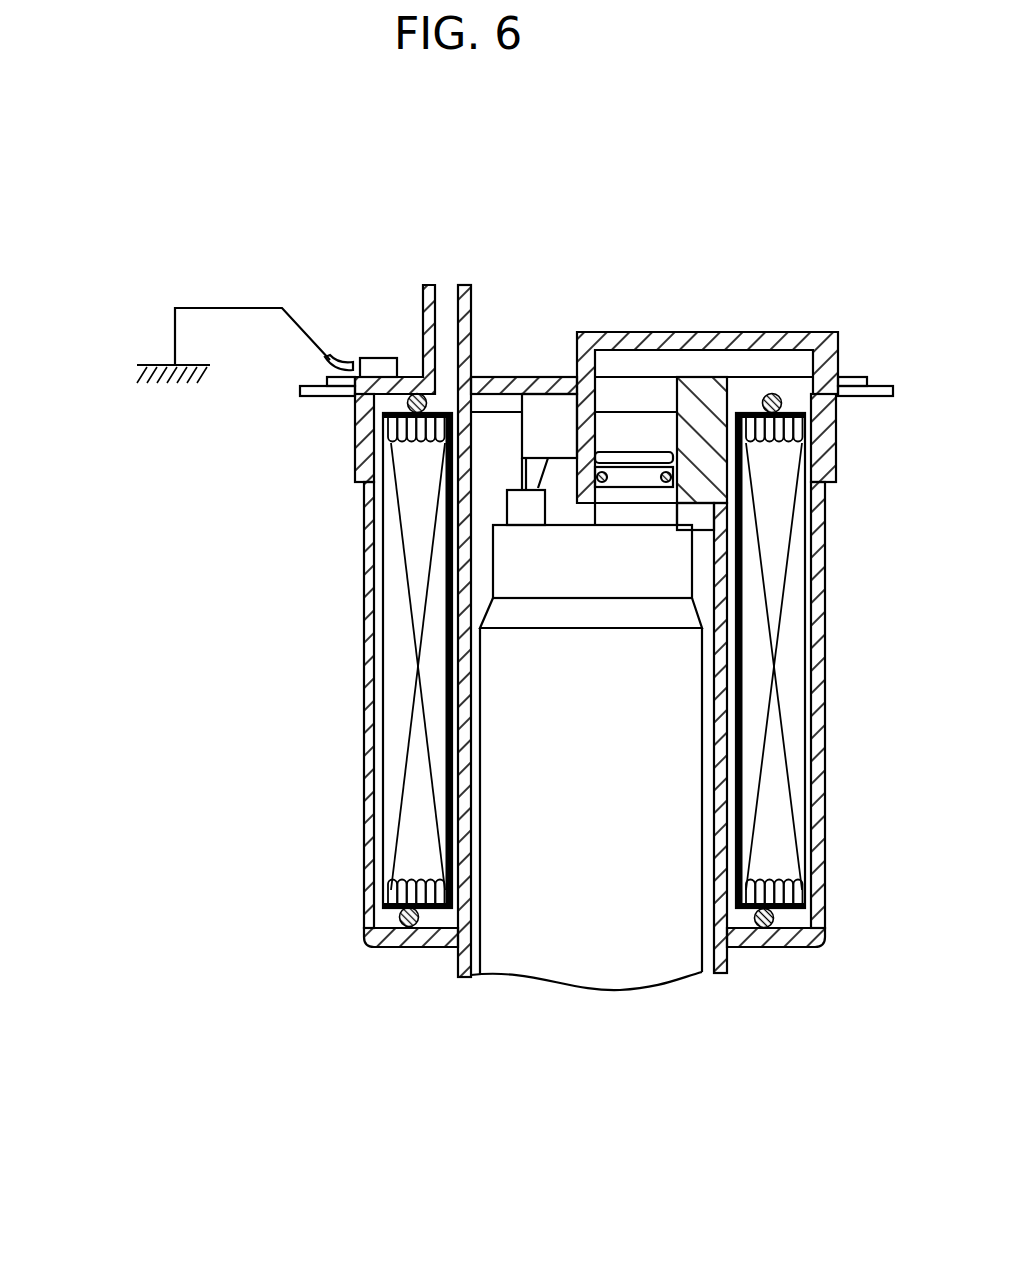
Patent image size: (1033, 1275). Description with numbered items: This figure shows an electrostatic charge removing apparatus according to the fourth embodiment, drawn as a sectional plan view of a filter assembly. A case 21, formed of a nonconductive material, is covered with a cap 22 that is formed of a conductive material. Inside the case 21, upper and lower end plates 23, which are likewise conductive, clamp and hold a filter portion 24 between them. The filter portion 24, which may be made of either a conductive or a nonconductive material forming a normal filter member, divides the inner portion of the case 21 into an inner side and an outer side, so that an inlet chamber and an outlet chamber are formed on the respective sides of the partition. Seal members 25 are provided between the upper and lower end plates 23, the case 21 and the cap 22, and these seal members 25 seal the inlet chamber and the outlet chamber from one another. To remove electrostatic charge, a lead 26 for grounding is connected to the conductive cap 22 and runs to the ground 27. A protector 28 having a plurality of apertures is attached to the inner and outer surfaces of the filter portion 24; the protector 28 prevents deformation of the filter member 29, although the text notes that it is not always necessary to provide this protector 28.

The case 21 is at (370, 725).
The cap 22 is at (538, 385).
The end plates 23 is at (360, 462).
The filter portion 24 is at (423, 812).
The seal members 25 is at (400, 410).
The lead 26 is at (343, 355).
The ground 27 is at (158, 383).
The protector 28 is at (442, 598).
The filter member 29 is at (397, 667).